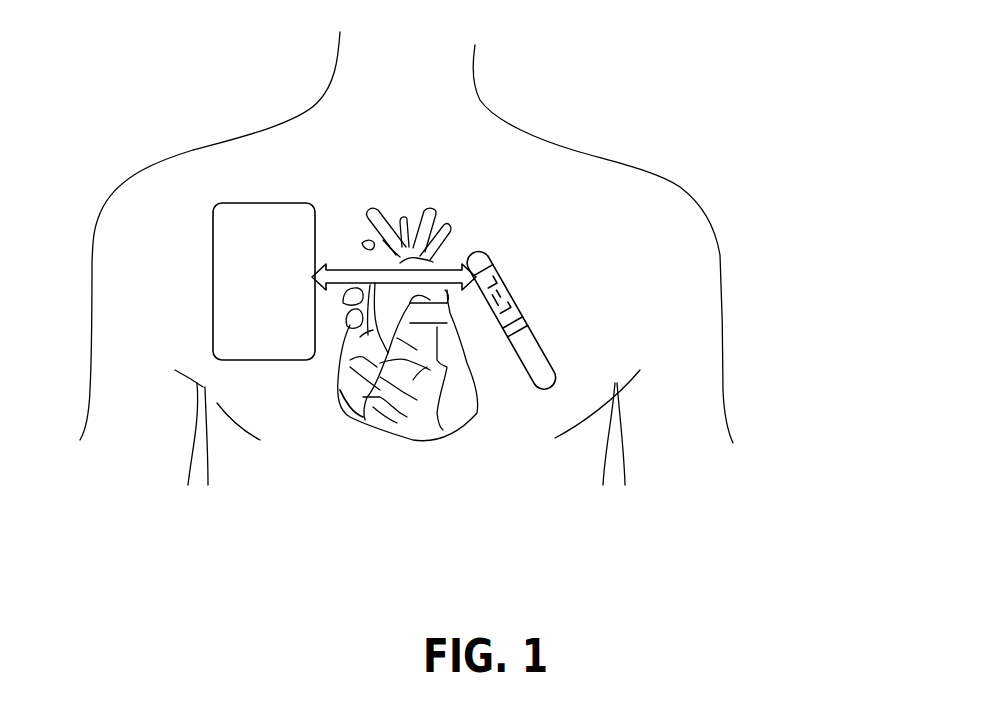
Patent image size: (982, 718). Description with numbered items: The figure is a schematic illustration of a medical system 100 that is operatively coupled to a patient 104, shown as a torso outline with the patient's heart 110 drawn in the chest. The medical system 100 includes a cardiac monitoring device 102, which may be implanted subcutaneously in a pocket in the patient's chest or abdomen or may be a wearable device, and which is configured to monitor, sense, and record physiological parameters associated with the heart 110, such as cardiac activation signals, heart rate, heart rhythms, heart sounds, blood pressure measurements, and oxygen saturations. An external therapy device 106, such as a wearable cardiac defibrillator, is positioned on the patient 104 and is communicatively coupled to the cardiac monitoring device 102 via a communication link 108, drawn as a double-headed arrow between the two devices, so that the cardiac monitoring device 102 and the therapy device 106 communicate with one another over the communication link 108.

The medical system 100 is at (262, 168).
The cardiac monitoring device 102 is at (525, 305).
The patient 104 is at (377, 532).
The external therapy device 106 is at (245, 278).
The communication link 108 is at (357, 270).
The heart 110 is at (462, 410).